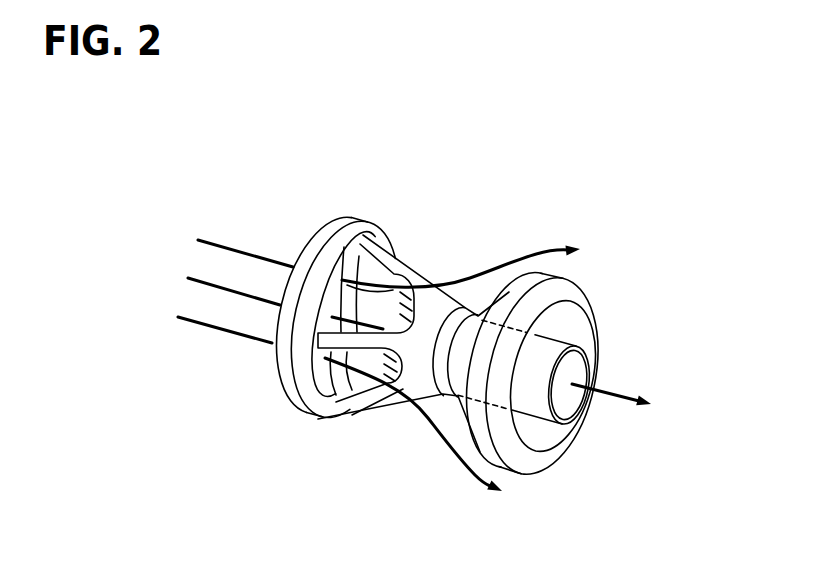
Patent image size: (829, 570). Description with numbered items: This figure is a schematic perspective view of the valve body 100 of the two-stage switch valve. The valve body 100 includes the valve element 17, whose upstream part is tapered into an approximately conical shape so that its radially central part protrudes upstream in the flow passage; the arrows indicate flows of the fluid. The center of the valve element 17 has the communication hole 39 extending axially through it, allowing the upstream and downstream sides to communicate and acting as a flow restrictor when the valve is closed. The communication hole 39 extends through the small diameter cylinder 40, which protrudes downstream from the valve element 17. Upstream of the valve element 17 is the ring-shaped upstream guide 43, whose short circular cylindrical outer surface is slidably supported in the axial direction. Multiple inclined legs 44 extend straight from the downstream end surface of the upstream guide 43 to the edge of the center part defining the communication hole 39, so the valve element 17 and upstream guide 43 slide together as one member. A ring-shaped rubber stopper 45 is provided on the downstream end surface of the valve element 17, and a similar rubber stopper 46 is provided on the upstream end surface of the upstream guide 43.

The valve body 100 is at (611, 209).
The rubber stopper 46 is at (312, 250).
The upstream guide 43 is at (336, 250).
The legs 44 is at (410, 268).
The valve element 17 is at (493, 315).
The rubber stopper 45 is at (580, 292).
The small diameter cylinder 40 is at (565, 336).
The communication hole 39 is at (568, 402).